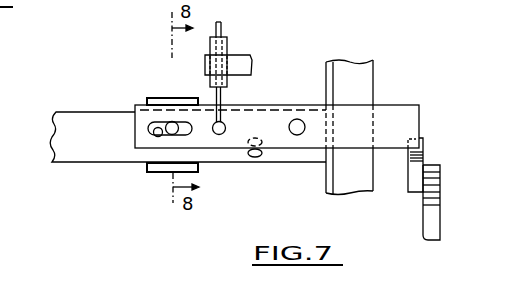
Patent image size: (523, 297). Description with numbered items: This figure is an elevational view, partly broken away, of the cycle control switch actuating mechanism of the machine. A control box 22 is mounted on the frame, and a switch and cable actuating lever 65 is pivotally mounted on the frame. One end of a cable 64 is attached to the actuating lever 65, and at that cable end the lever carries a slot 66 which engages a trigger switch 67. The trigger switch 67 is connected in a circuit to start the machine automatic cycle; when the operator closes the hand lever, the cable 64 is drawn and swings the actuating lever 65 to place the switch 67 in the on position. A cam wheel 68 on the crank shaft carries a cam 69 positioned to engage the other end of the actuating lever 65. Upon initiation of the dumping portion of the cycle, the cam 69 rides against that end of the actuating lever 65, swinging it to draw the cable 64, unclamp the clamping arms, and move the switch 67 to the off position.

The control box 22 is at (360, 93).
The cable 64 is at (222, 30).
The switch and cable actuating lever 65 is at (265, 119).
The slot 66 is at (156, 135).
The trigger switch 67 is at (173, 126).
The cam wheel 68 is at (442, 212).
The cam 69 is at (423, 156).